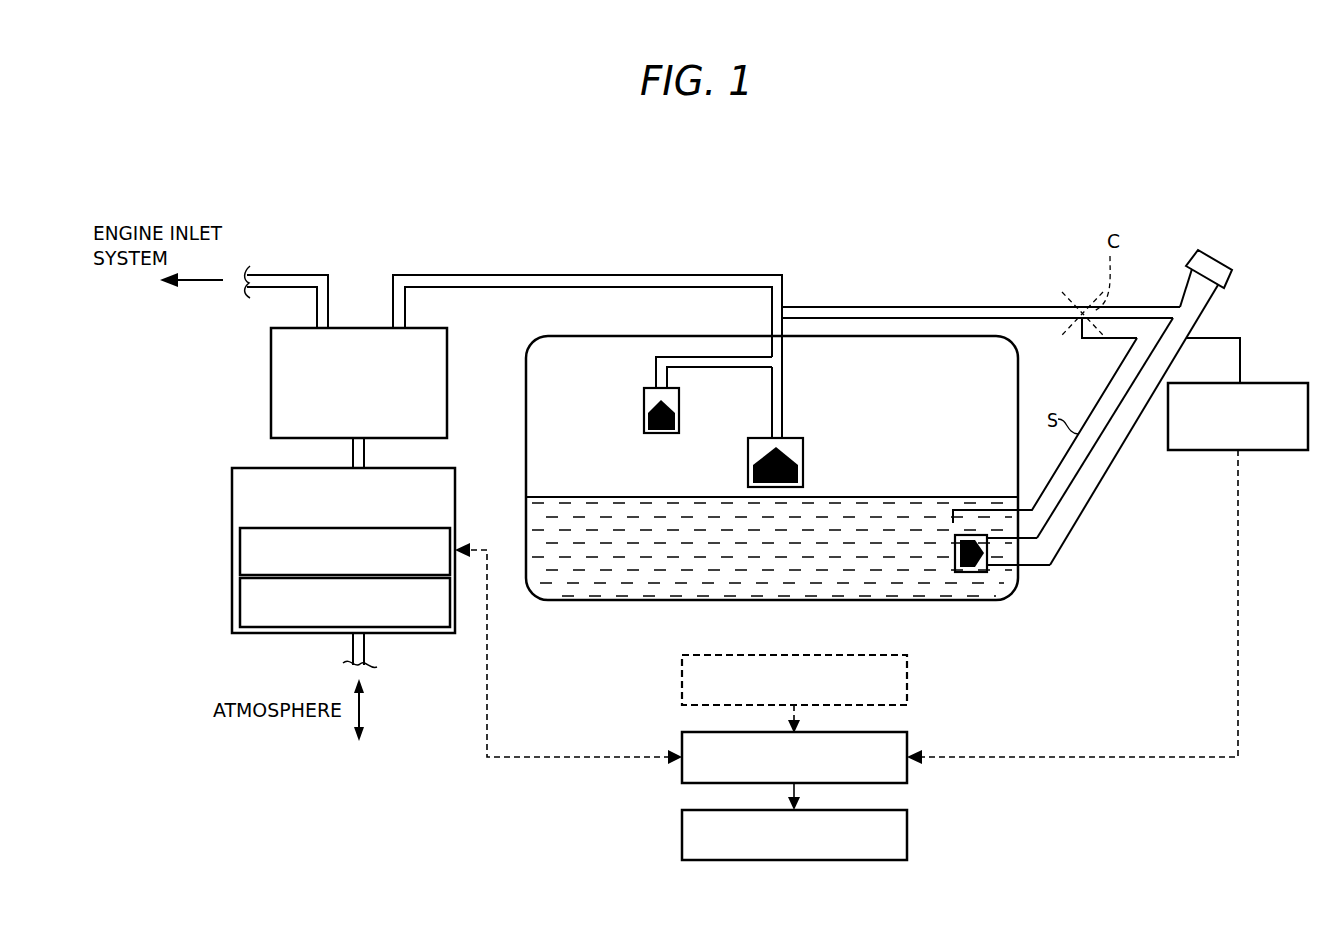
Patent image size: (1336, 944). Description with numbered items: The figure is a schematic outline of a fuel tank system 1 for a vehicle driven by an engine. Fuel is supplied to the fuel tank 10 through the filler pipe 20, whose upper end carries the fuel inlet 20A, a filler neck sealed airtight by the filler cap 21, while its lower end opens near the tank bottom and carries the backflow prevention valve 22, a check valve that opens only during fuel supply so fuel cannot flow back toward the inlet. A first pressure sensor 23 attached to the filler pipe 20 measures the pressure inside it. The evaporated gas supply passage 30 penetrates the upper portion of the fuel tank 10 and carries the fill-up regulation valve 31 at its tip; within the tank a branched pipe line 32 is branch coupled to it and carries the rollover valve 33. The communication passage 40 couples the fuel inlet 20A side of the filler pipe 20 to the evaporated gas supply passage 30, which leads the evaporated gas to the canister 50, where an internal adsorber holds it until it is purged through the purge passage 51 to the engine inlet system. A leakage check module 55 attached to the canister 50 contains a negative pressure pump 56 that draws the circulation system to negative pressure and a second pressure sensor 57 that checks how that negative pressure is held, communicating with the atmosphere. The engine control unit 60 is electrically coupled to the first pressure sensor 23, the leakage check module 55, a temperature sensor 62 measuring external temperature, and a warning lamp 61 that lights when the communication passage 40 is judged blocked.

The fuel tank system 1 is at (1210, 161).
The fuel tank 10 is at (1020, 396).
The filler pipe 20 is at (1100, 481).
The fuel inlet 20A is at (1227, 290).
The filler cap 21 is at (1215, 275).
The backflow prevention valve 22 is at (978, 572).
The first pressure sensor 23 is at (1272, 383).
The evaporated gas supply passage 30 is at (682, 275).
The fill-up regulation valve 31 is at (800, 449).
The branched pipe line 32 is at (721, 367).
The rollover valve 33 is at (647, 400).
The communication passage 40 is at (977, 313).
The canister 50 is at (271, 383).
The purge passage 51 is at (283, 275).
The leakage check module 55 is at (232, 510).
The negative pressure pump 56 is at (240, 556).
The second pressure sensor 57 is at (240, 604).
The engine control unit 60 is at (908, 736).
The warning lamp 61 is at (908, 832).
The temperature sensor 62 is at (910, 668).